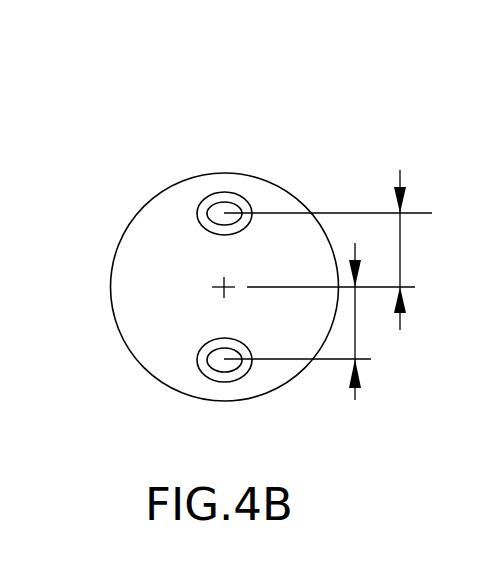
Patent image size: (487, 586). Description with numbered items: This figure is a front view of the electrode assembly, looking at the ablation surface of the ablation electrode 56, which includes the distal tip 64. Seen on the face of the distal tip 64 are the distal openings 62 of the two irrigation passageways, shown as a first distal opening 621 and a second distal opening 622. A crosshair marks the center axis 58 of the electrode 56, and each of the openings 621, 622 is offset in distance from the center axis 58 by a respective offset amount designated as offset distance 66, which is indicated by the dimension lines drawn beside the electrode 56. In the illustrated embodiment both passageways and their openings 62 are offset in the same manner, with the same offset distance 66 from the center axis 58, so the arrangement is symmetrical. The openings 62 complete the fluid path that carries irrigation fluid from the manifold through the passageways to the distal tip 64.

The ablation electrode 56 is at (299, 152).
The center axis 58 is at (222, 283).
The distal openings 62 is at (221, 292).
The distal opening of first irrigation passageway 621 is at (224, 211).
The distal opening of second irrigation passageway 622 is at (224, 361).
The distal tip 64 is at (173, 329).
The offset distance 66 is at (398, 248).